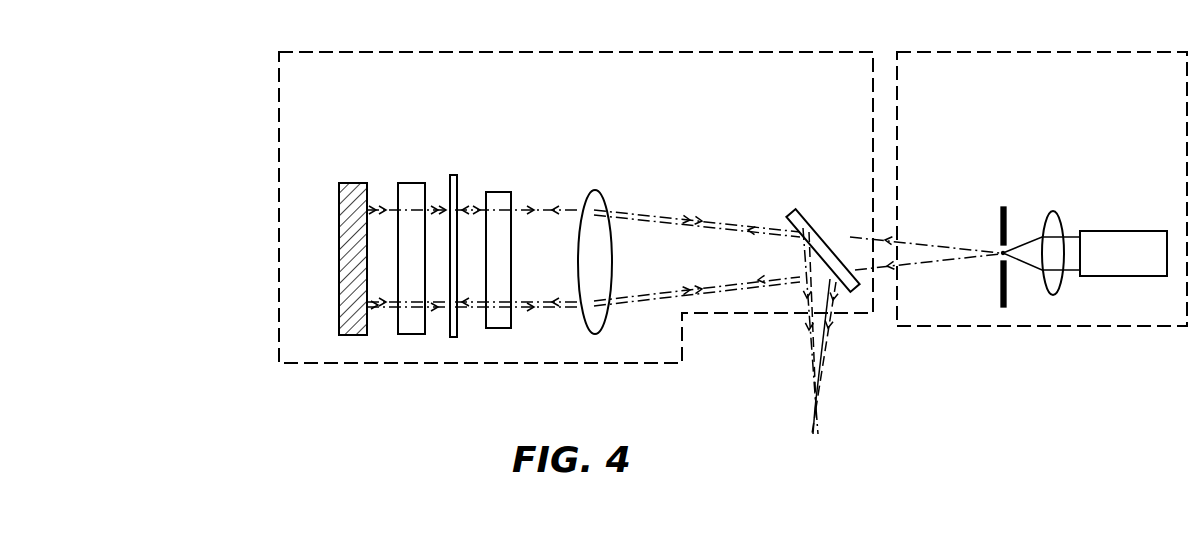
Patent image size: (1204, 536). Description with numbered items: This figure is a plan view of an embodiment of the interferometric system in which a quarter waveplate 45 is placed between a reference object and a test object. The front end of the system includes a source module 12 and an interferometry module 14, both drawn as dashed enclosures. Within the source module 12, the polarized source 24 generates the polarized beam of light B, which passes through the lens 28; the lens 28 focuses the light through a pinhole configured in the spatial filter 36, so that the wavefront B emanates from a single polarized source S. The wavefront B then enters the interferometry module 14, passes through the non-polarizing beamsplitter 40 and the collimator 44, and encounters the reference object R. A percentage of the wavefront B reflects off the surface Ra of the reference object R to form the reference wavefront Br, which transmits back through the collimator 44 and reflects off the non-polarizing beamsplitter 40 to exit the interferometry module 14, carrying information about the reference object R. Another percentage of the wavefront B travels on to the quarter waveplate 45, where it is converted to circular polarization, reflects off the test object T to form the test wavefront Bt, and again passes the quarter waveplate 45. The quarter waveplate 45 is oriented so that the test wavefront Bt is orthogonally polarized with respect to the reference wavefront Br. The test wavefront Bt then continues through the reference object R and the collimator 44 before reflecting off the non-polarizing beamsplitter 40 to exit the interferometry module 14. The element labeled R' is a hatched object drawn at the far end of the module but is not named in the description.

The source module 12 is at (1119, 328).
The interferometry module 14 is at (508, 366).
The polarized source 24 is at (1146, 229).
The lens 28 is at (1061, 212).
The spatial filter 36 is at (995, 204).
The non-polarizing beamsplitter 40 is at (795, 206).
The collimator 44 is at (601, 190).
The quarter waveplate 45 is at (452, 173).
The reference object R is at (509, 222).
The reference surface Ra is at (485, 190).
The reference reflector R' is at (346, 212).
The test object T is at (410, 181).
The polarized source S is at (1000, 258).
The polarized beam of light B is at (1079, 222).
The reference wavefront Br is at (812, 407).
The test wavefront Bt is at (820, 407).